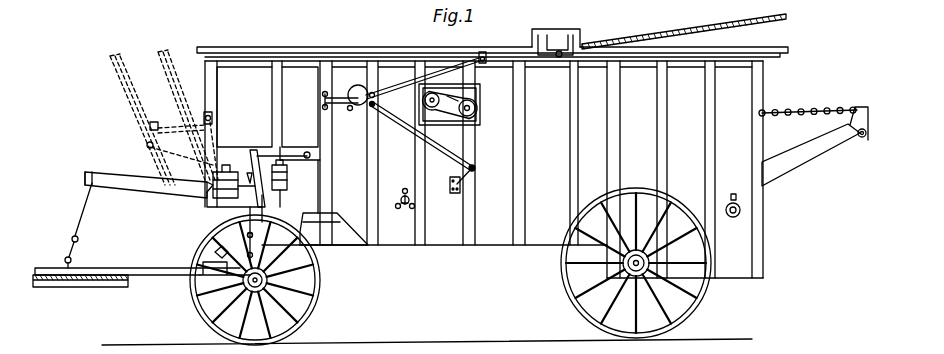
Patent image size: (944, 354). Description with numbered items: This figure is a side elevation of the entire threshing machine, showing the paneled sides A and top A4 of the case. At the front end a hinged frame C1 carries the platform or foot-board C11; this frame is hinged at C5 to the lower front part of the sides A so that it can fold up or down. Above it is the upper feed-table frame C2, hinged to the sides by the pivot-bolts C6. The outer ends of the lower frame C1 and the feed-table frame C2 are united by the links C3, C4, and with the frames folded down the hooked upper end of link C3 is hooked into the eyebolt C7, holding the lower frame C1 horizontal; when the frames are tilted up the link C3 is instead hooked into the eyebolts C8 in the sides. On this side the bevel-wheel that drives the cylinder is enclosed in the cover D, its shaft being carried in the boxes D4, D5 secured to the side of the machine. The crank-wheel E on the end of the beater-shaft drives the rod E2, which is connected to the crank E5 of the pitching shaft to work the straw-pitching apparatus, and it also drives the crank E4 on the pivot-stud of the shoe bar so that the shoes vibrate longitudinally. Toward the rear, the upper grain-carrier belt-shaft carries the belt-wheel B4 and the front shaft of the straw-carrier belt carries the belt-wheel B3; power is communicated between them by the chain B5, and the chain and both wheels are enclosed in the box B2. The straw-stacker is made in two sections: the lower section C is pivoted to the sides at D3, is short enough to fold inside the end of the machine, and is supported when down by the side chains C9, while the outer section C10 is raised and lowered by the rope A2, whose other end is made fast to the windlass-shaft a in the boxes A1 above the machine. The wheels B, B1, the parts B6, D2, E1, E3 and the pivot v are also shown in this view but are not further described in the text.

The sides of the machine A is at (558, 178).
The boxes A1 is at (556, 33).
The rope A2 is at (684, 31).
The top A4 is at (492, 42).
The windlass-shaft a is at (558, 58).
The front wheel B is at (262, 280).
The rear wheel B1 is at (629, 263).
The box B2 is at (449, 110).
The belt-wheel B3 is at (478, 113).
The belt-wheel B4 is at (418, 104).
The chain B5 is at (481, 97).
The belt guide B6 is at (450, 95).
The straw-stacker lower section C is at (142, 119).
The hinged frame C1 is at (811, 155).
The platform or foot-board C11 is at (80, 288).
The upper feed-table frame C2 is at (150, 132).
The link C3 is at (144, 188).
The link C4 is at (135, 195).
The hinge C5 is at (229, 249).
The pivot-bolts C6 is at (217, 157).
The eyebolt C7 is at (137, 215).
The eyebolts C8 is at (220, 115).
The side chains C9 is at (808, 104).
The outer section of the stacker C10 is at (859, 131).
The cover D is at (288, 200).
The fitting D2 is at (404, 190).
The pivot of the stacker D3 is at (734, 196).
The box D4 is at (291, 183).
The box D5 is at (234, 192).
The crank-wheel E is at (359, 89).
The lever E1 is at (341, 109).
The rod E2 is at (388, 86).
The rod E3 is at (423, 136).
The crank E4 is at (462, 180).
The crank E5 is at (497, 47).
The pivot v is at (243, 235).